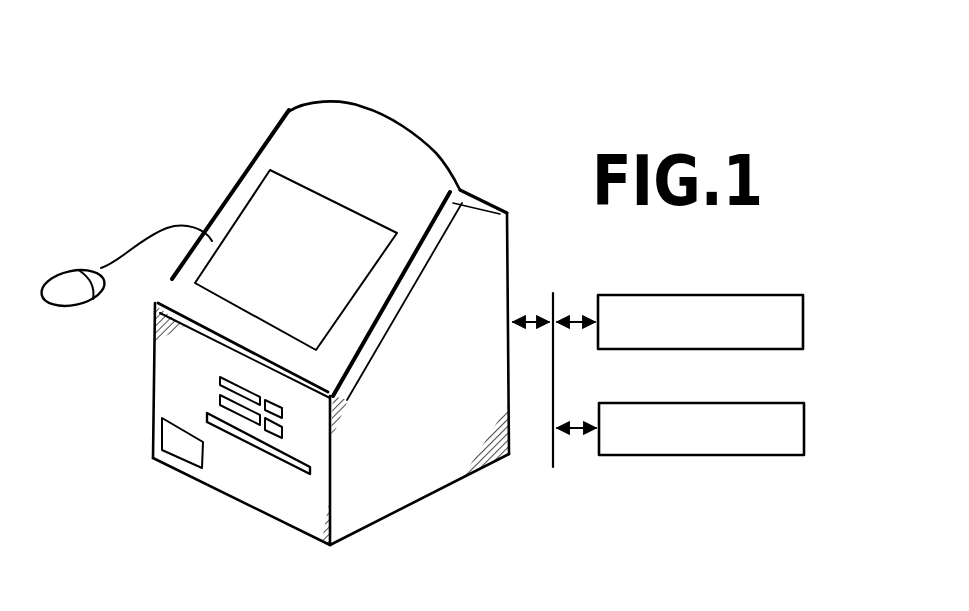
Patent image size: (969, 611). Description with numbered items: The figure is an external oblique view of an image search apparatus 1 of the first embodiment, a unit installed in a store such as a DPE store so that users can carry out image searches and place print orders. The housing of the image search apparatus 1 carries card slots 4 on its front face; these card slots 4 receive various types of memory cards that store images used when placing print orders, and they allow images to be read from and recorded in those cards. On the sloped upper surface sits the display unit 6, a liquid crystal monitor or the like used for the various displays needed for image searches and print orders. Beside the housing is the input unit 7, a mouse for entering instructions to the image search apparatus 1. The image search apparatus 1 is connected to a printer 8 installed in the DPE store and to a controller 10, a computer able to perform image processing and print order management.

The image search apparatus 1 is at (395, 83).
The card slots 4 is at (231, 440).
The display unit 6 is at (357, 230).
The input unit 7 is at (49, 273).
The printer 8 is at (805, 322).
The controller 10 is at (806, 428).